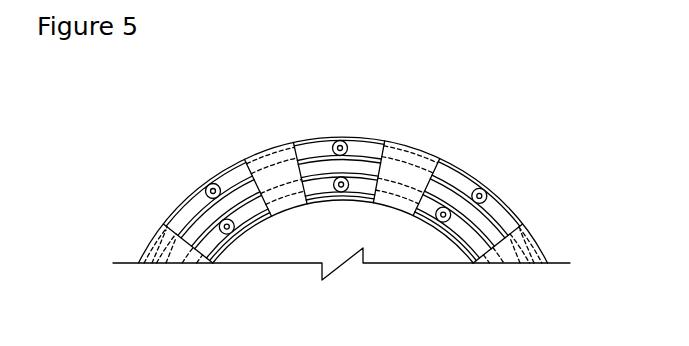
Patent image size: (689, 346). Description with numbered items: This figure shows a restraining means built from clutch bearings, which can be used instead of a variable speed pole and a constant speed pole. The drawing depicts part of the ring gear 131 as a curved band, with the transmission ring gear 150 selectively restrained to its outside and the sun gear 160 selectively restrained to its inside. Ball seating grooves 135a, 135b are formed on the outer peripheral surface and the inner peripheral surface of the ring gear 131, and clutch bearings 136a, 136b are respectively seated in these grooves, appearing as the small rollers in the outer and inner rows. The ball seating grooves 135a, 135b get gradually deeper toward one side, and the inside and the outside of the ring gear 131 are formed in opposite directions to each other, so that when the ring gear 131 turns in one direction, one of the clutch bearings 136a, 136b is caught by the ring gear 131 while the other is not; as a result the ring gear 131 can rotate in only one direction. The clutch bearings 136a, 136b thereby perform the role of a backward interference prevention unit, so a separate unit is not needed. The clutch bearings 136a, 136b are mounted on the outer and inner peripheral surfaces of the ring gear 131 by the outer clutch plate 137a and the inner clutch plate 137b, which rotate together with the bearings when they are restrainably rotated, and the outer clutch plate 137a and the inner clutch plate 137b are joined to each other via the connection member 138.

The ring gear 131 is at (360, 170).
The transmission ring gear 150 is at (440, 165).
The ball seating groove 135a is at (513, 219).
The ball seating groove 135b is at (440, 180).
The clutch bearing 136a is at (340, 140).
The clutch bearing 136b is at (333, 181).
The outer clutch plate 137a is at (232, 180).
The inner clutch plate 137b is at (207, 248).
The connection member 138 is at (176, 256).
The sun gear 160 is at (452, 240).